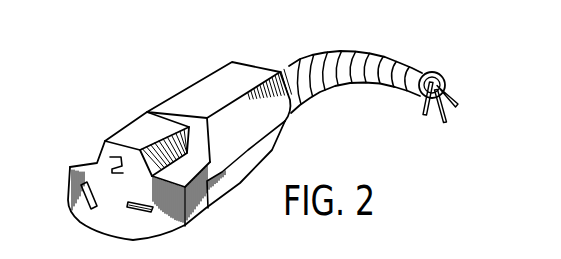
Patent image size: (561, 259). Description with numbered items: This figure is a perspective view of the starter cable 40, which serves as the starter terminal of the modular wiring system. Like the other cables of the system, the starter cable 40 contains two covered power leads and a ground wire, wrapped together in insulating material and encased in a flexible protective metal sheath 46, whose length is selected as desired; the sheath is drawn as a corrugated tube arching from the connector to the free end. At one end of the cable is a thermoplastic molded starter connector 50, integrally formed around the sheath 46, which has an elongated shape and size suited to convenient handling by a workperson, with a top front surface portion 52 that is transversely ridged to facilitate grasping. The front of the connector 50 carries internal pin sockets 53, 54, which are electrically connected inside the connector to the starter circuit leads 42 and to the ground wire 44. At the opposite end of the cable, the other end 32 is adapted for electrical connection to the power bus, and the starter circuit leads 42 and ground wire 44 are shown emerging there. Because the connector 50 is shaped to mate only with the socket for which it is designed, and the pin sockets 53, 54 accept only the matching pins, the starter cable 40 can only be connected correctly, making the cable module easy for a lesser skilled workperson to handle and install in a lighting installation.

The other end 32 is at (452, 78).
The starter cable 40 is at (257, 63).
The starter circuit leads 42 is at (456, 104).
The ground wire 44 is at (446, 123).
The flexible protective metal sheath 46 is at (355, 53).
The starter connector 50 is at (122, 150).
The top front surface portion 52 is at (147, 112).
The pin socket 53 is at (108, 163).
The pin sockets 54 is at (136, 213).